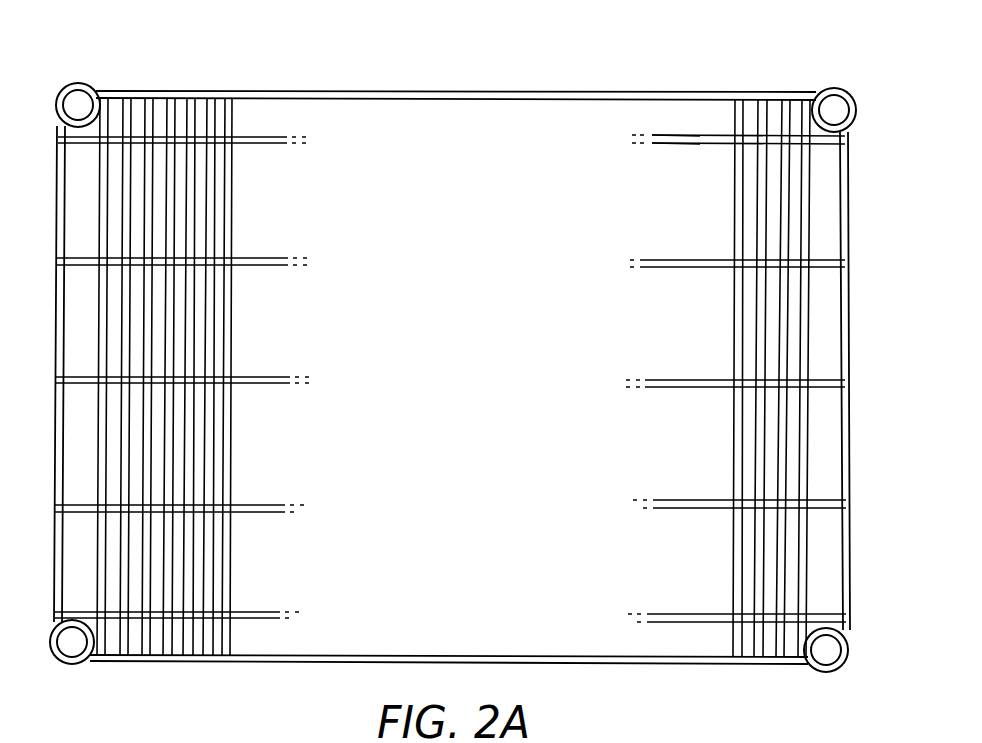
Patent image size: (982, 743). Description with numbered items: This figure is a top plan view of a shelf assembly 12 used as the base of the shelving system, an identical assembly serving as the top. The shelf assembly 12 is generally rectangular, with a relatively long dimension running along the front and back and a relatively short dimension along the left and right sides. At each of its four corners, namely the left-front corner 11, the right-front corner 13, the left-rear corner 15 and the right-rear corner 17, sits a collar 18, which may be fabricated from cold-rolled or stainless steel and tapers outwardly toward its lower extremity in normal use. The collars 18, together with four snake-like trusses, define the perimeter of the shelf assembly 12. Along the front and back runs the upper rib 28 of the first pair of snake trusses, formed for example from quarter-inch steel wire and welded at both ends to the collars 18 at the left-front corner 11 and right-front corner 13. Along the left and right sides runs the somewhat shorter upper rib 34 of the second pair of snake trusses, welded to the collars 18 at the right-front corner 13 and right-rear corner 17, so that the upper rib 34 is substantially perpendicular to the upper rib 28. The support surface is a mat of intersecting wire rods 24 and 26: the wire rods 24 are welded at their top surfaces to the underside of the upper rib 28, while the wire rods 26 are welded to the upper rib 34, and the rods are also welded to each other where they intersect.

The left-front corner 11 is at (58, 664).
The base shelf assembly 12 is at (454, 380).
The right-front corner 13 is at (843, 670).
The left-rear corner 15 is at (68, 84).
The right-rear corner 17 is at (852, 88).
The collar 18 is at (89, 88).
The wire rod 24 is at (228, 216).
The wire rod 26 is at (652, 146).
The upper rib 28 is at (330, 90).
The upper rib 34 is at (55, 372).